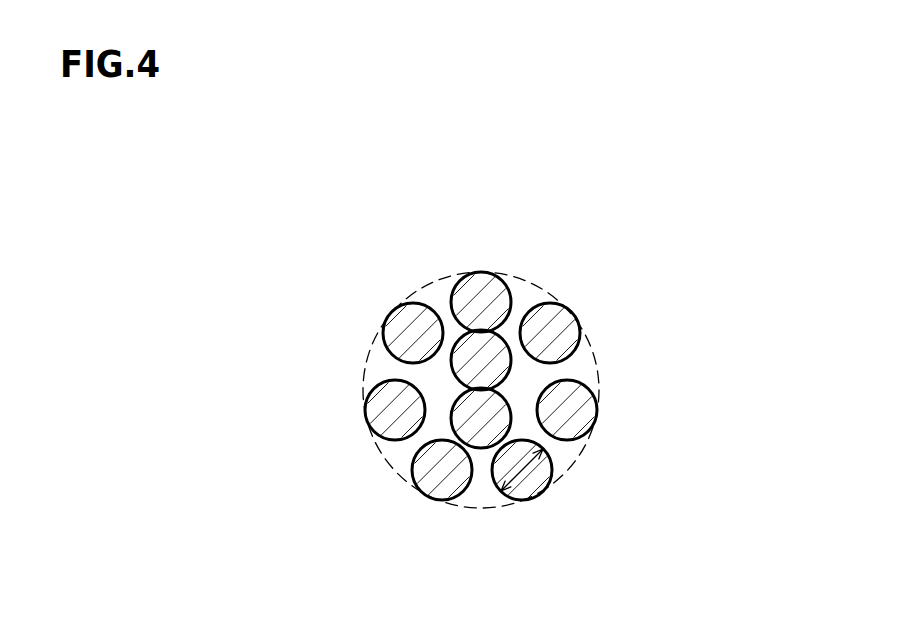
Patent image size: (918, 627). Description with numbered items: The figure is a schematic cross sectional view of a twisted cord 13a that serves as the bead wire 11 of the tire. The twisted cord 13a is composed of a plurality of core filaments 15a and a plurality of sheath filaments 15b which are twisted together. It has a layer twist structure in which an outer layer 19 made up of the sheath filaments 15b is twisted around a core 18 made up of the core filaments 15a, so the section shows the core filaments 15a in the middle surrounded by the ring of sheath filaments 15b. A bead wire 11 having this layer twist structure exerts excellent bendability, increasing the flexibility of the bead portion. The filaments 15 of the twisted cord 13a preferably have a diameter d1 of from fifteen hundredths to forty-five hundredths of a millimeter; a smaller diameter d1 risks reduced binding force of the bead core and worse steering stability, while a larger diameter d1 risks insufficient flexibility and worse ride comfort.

The bead wire 11 is at (481, 349).
The twisted cord 13a is at (459, 508).
The filaments 15 is at (481, 398).
The core filaments 15a is at (481, 360).
The sheath filaments 15b is at (481, 409).
The core 18 is at (446, 396).
The outer layer 19 is at (583, 360).
The diameter d1 is at (520, 470).